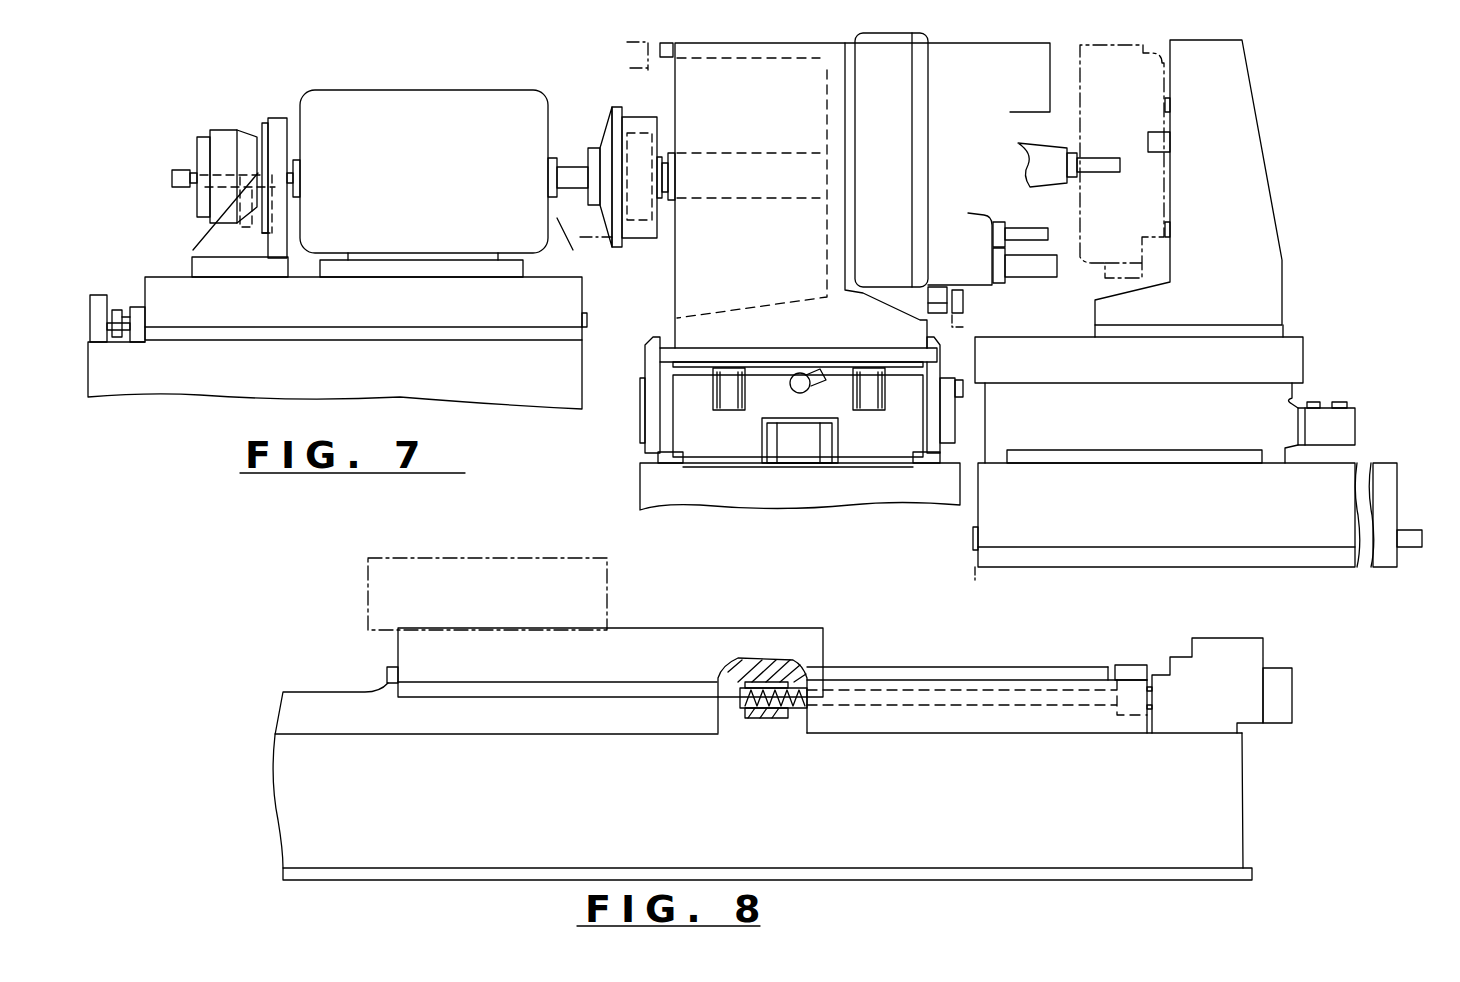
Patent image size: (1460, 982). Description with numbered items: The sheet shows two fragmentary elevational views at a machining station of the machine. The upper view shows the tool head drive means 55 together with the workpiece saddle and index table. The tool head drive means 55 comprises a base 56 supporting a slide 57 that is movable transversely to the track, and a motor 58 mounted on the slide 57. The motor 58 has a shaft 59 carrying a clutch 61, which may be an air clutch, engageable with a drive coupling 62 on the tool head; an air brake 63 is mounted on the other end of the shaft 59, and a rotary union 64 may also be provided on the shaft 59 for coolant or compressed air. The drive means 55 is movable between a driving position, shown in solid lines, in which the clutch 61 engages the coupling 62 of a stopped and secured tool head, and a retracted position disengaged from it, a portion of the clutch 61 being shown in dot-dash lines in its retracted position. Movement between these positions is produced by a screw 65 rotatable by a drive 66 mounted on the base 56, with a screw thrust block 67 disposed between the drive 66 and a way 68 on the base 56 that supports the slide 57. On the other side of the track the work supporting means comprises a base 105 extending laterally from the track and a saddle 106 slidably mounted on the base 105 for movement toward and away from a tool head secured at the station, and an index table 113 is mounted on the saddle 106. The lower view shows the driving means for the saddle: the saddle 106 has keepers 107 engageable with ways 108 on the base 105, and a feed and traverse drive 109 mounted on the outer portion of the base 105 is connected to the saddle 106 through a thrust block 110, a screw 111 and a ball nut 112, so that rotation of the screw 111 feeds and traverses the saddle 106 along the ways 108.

In FIG. 7, the tool head drive means 55 is at (160, 197).
In FIG. 7, the base 56 is at (218, 385).
In FIG. 7, the slide 57 is at (203, 315).
In FIG. 7, the motor 58 is at (455, 98).
In FIG. 7, the shaft 59 is at (567, 167).
In FIG. 7, the clutch 61 is at (632, 118).
In FIG. 7, the drive coupling 62 is at (647, 235).
In FIG. 7, the air brake 63 is at (230, 132).
In FIG. 7, the rotary union 64 is at (180, 168).
In FIG. 7, the screw 65 is at (135, 308).
In FIG. 7, the drive 66 is at (100, 297).
In FIG. 7, the screw thrust block 67 is at (118, 310).
In FIG. 7, the way 68 is at (140, 317).
In FIG. 8, the base 105 is at (863, 790).
In FIG. 7, the saddle 106 is at (1328, 483).
In FIG. 8, the saddle 106 is at (695, 638).
In FIG. 8, the keepers 107 is at (608, 688).
In FIG. 8, the ways 108 is at (933, 668).
In FIG. 8, the feed and traverse drive 109 is at (1232, 645).
In FIG. 8, the thrust block 110 is at (1127, 673).
In FIG. 8, the screw 111 is at (797, 693).
In FIG. 8, the ball nut 112 is at (763, 688).
In FIG. 7, the index table 113 is at (1323, 387).
In FIG. 8, the index table 113 is at (617, 569).